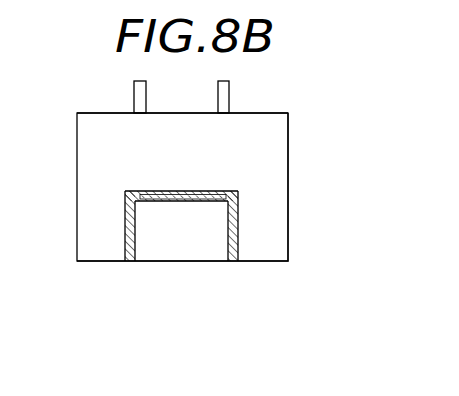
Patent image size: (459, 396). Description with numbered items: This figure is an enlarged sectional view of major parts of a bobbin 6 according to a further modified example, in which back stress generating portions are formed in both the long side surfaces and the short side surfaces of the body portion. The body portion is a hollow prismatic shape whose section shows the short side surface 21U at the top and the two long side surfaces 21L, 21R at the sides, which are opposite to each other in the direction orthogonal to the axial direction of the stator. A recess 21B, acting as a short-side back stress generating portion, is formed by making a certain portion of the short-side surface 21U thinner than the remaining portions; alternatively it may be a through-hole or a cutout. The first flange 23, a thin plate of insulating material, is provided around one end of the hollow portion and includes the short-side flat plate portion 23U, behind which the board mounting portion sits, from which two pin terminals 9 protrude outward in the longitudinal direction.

The bobbin 6 is at (296, 110).
The pin terminal 9 is at (135, 95).
The first flange 23 is at (296, 166).
The short-side flat plate portion 23U is at (269, 147).
The short side surface 21U is at (187, 191).
The recess 21B is at (173, 199).
The long side surface 21L is at (125, 233).
The long side surface 21R is at (238, 242).